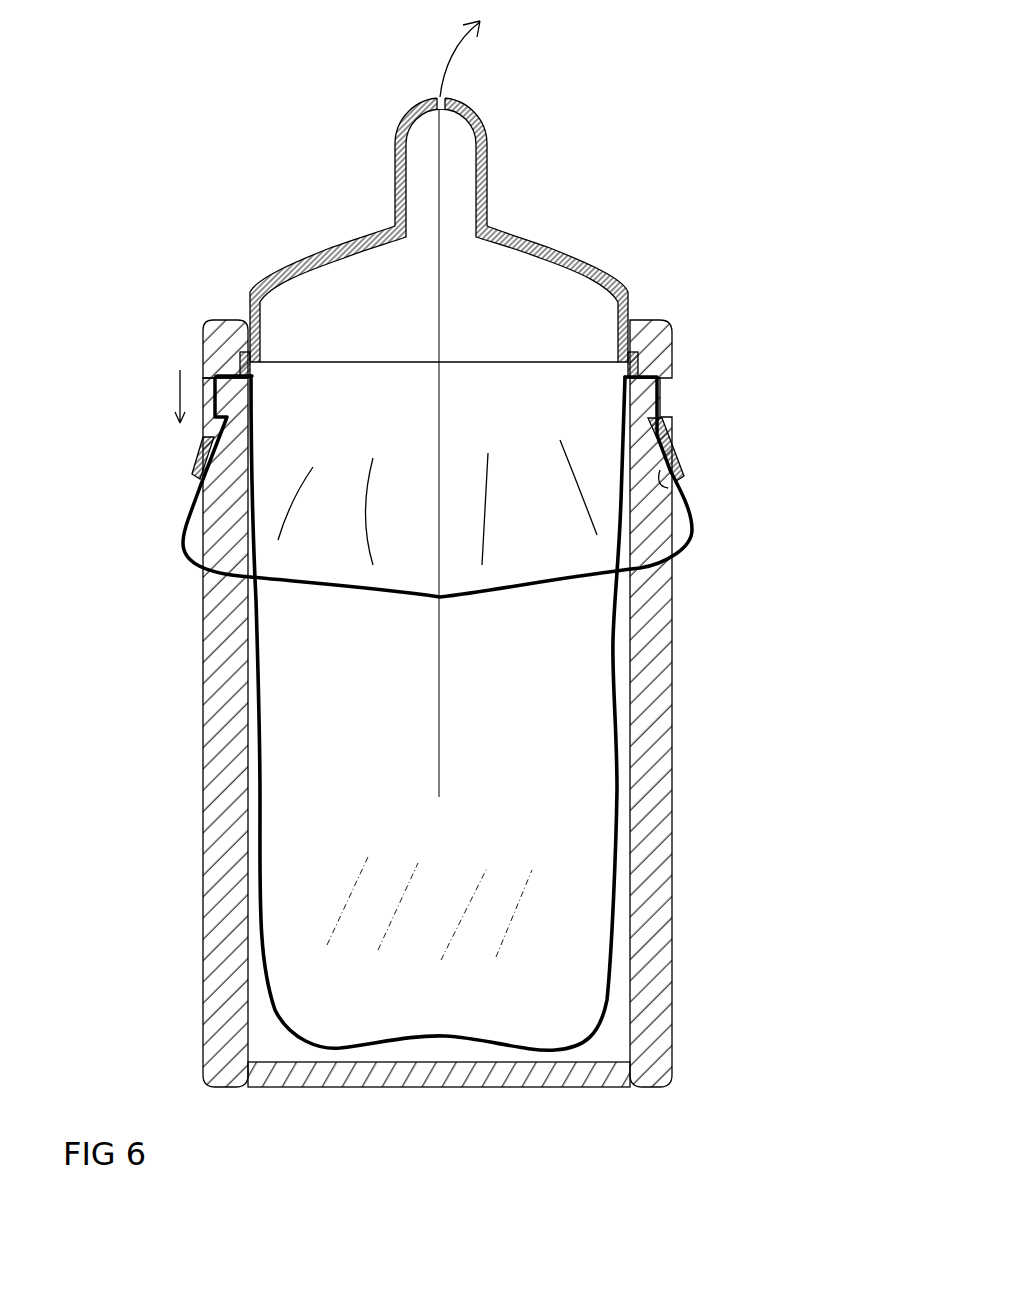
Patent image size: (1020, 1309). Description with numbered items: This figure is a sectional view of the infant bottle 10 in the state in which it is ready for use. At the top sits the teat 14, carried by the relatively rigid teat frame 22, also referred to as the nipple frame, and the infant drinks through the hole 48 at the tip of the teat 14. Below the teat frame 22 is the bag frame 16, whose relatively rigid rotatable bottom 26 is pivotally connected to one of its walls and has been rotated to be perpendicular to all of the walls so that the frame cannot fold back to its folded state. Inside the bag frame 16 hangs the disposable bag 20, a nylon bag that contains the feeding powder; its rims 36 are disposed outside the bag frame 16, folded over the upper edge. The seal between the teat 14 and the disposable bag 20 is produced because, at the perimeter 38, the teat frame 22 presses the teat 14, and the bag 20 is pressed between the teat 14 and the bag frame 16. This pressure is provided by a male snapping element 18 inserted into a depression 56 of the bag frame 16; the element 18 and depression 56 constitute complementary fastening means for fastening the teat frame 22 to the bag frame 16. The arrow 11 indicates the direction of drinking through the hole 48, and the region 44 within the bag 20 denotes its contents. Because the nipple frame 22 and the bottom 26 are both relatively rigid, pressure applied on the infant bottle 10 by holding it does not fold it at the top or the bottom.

The infant bottle 10 is at (265, 166).
The flow direction arrow 11 is at (461, 59).
The teat 14 is at (488, 167).
The hole 48 is at (437, 94).
The teat frame 22 is at (672, 337).
The perimeter 38 is at (228, 360).
The bag frame 16 is at (657, 640).
The rotatable bottom 26 is at (458, 1080).
The male snapping element 18 is at (676, 460).
The depression 56 is at (680, 490).
The rims 36 is at (693, 529).
The disposable bag 20 is at (620, 822).
The liquid contents 44 is at (428, 909).